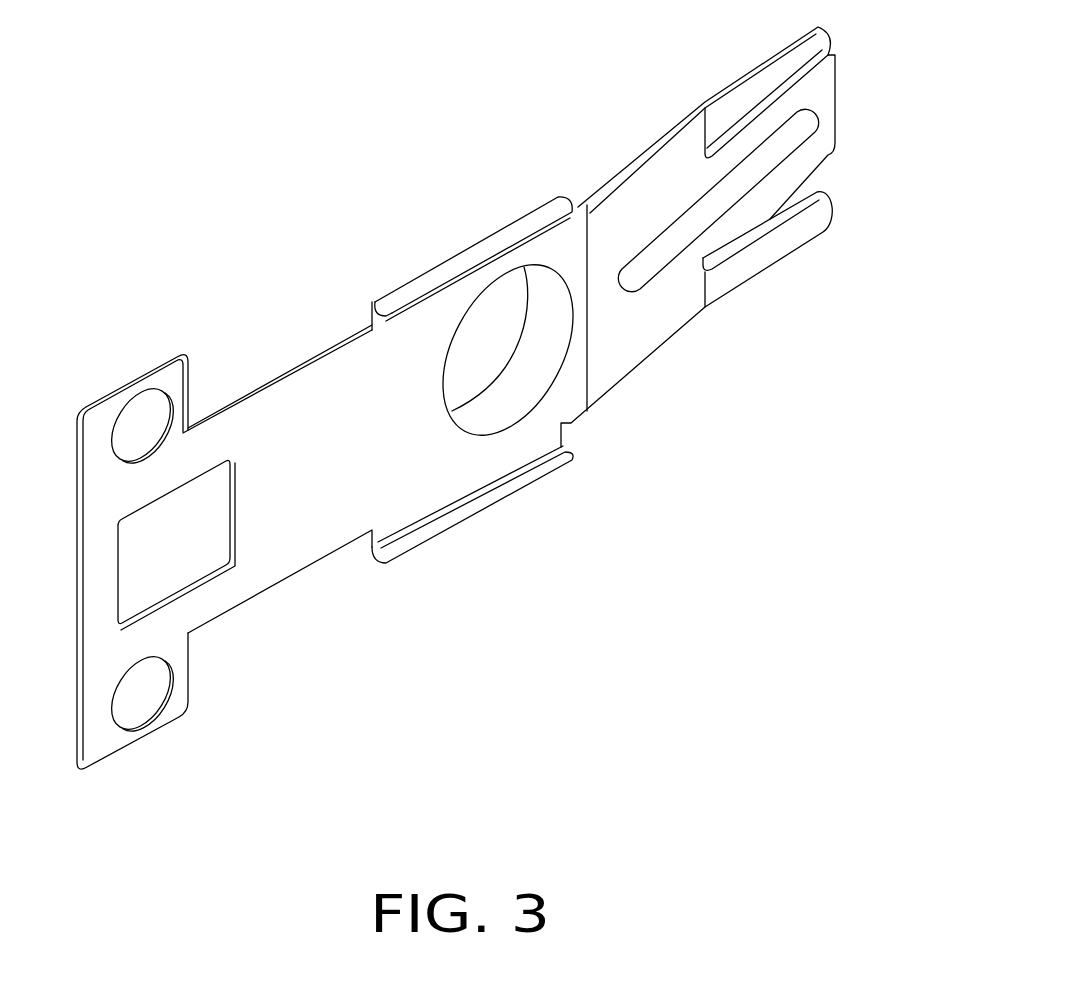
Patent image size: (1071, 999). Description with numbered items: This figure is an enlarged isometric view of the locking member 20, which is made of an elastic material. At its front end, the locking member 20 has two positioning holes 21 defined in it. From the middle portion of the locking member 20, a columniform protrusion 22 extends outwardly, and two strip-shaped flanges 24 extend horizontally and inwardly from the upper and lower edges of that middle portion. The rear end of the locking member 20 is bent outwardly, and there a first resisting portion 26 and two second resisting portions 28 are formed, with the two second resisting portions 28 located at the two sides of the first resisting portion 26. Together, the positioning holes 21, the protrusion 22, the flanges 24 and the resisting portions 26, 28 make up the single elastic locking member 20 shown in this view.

The locking member 20 is at (377, 240).
The positioning holes 21 is at (134, 424).
The columniform protrusion 22 is at (498, 335).
The strip-shaped flanges 24 is at (514, 236).
The first resisting portion 26 is at (820, 99).
The second resisting portions 28 is at (798, 60).